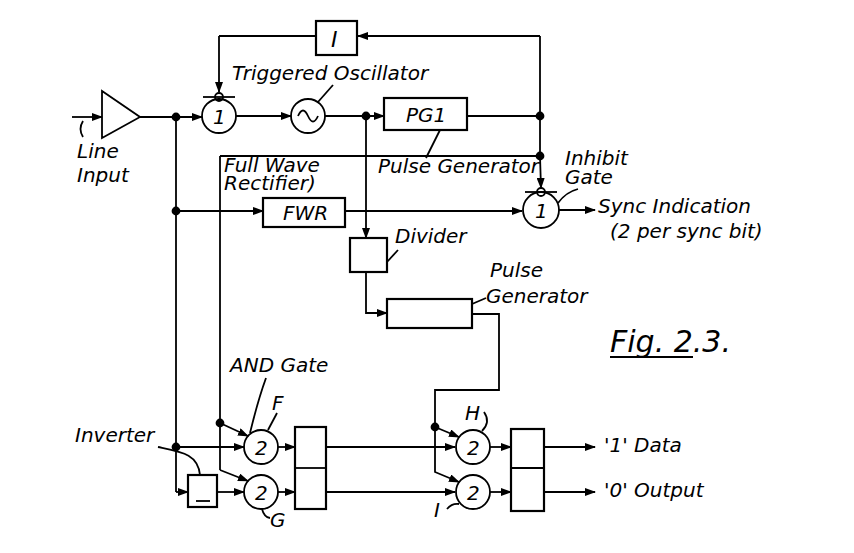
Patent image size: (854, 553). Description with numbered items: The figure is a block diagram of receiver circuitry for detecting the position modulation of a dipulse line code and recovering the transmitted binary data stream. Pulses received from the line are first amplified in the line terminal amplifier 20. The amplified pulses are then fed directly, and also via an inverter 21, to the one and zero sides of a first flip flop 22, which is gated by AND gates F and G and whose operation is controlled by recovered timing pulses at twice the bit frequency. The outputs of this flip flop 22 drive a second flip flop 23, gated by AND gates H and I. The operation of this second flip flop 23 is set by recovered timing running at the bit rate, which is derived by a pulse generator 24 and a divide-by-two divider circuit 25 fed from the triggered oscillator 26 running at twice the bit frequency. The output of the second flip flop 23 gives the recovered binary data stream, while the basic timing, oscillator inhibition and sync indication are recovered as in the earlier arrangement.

The line terminal amplifier 20 is at (120, 106).
The inverter 21 is at (186, 498).
The flip flop 22 is at (311, 427).
The second flip flop 23 is at (545, 441).
The pulse generator 24 is at (447, 298).
The divider circuit 25 is at (350, 253).
The triggered oscillator 26 is at (294, 124).